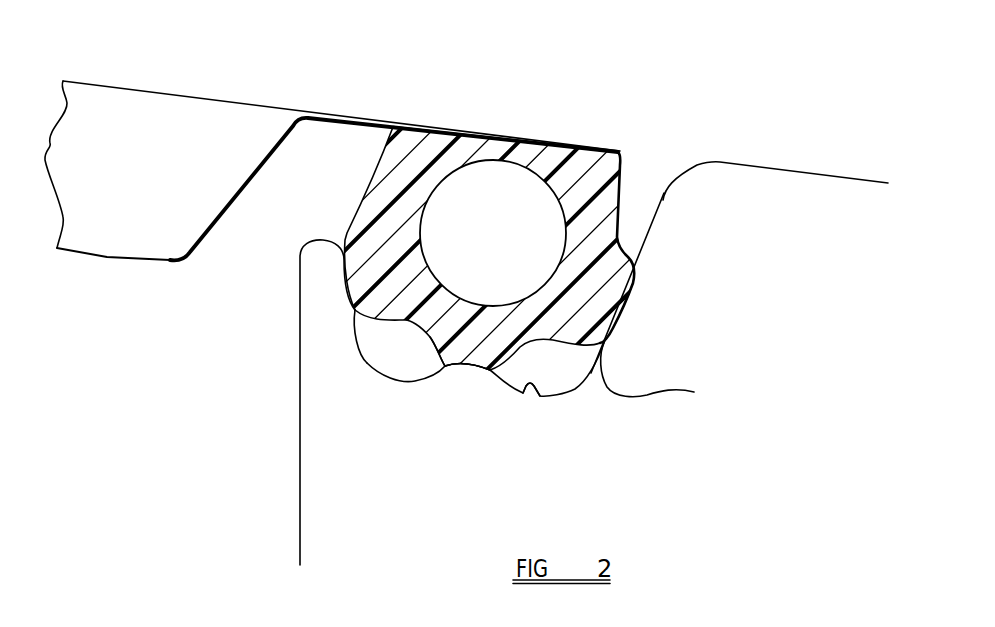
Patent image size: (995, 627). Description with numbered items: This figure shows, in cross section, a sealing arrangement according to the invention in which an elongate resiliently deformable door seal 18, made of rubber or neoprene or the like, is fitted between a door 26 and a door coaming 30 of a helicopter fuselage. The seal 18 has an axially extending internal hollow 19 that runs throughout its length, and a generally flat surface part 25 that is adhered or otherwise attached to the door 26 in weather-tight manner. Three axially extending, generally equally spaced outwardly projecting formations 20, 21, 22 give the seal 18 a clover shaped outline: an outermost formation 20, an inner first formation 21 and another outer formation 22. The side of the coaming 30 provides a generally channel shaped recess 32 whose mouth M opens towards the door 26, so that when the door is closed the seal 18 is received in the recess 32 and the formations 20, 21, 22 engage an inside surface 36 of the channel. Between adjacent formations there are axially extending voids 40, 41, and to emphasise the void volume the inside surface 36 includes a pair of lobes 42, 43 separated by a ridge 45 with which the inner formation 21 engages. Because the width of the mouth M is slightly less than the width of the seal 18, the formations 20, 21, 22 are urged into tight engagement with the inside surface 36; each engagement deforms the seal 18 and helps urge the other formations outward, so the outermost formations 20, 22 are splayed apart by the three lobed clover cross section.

The door seal 18 is at (366, 172).
The internal hollow 19 is at (510, 223).
The outermost formation 20 is at (605, 297).
The first formation 21 is at (440, 365).
The outer formation 22 is at (362, 281).
The flat surface part 25 is at (497, 137).
The door 26 is at (192, 143).
The door coaming 30 is at (753, 215).
The channel shaped recess 32 is at (640, 178).
The inside surface 36 is at (538, 390).
The void 40 is at (560, 375).
The void 41 is at (397, 347).
The lobe 42 is at (660, 375).
The lobe 43 is at (357, 352).
The ridge 45 is at (472, 373).
The mouth M is at (663, 193).